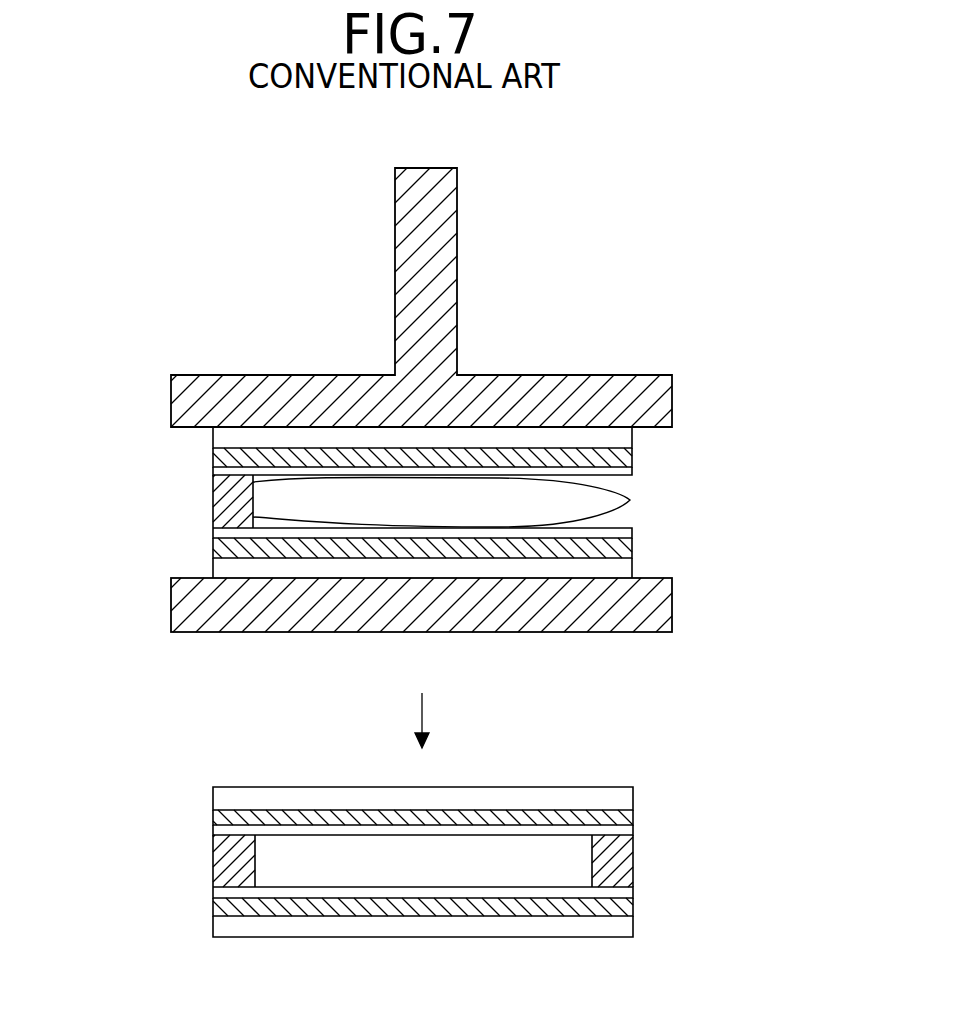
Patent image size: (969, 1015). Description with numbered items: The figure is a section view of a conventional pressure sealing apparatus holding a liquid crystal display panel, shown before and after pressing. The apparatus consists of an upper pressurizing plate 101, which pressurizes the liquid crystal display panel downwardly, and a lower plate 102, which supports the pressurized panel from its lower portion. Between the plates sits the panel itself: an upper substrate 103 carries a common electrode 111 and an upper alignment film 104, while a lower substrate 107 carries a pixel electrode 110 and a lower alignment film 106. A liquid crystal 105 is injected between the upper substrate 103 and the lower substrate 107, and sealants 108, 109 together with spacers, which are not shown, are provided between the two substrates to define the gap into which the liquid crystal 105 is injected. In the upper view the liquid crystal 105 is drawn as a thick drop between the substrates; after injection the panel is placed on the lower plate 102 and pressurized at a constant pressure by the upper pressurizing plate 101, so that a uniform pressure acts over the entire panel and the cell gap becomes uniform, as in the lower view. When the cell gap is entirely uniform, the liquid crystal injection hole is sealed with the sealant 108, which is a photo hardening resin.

The upper pressurizing plate 101 is at (660, 388).
The lower plate 102 is at (672, 613).
The upper substrate 103 is at (632, 442).
The upper alignment film 104 is at (632, 472).
The liquid crystal 105 is at (632, 501).
The lower alignment film 106 is at (632, 528).
The lower substrate 107 is at (632, 560).
The sealant 108 is at (633, 855).
The sealant 109 is at (213, 510).
The pixel electrode 110 is at (213, 552).
The common electrode 111 is at (213, 462).